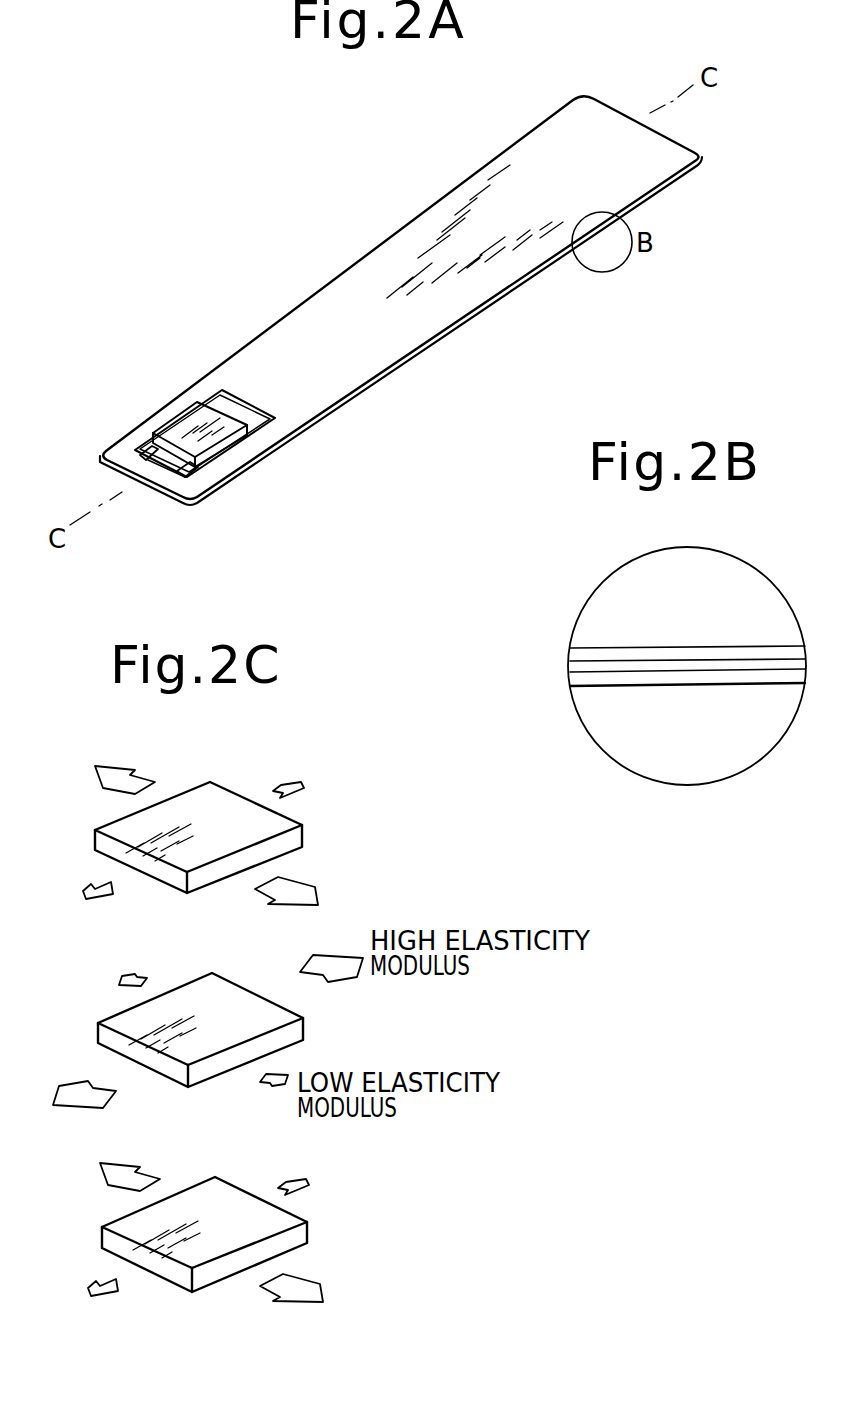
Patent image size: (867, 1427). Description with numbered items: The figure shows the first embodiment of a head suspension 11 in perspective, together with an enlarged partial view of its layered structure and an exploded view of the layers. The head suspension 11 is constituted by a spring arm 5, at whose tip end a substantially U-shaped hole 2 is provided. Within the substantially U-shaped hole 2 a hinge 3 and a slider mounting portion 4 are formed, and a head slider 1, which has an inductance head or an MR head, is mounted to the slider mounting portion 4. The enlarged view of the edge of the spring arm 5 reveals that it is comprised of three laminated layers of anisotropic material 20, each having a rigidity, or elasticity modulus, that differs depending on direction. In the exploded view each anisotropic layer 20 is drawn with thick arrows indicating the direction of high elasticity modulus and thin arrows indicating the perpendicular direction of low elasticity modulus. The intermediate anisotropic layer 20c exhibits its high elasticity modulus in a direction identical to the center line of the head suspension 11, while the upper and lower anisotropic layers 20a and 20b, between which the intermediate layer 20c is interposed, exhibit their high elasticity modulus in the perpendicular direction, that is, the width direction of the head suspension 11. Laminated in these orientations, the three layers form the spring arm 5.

In FIG. 2A, the head suspension 11 is at (423, 186).
In FIG. 2A, the spring arm 5 is at (362, 290).
In FIG. 2A, the substantially U-shaped hole 2 is at (265, 410).
In FIG. 2A, the head slider 1 is at (185, 422).
In FIG. 2A, the hinge 3 is at (162, 465).
In FIG. 2A, the slider mounting portion 4 is at (218, 455).
In FIG. 2B, the anisotropic material layer 20 is at (657, 682).
In FIG. 2C, the anisotropic material layer 20 is at (217, 1034).
In FIG. 2C, the upper anisotropic layer 20a is at (303, 833).
In FIG. 2C, the lower anisotropic layer 20b is at (309, 1230).
In FIG. 2C, the intermediate anisotropic layer 20c is at (305, 1026).